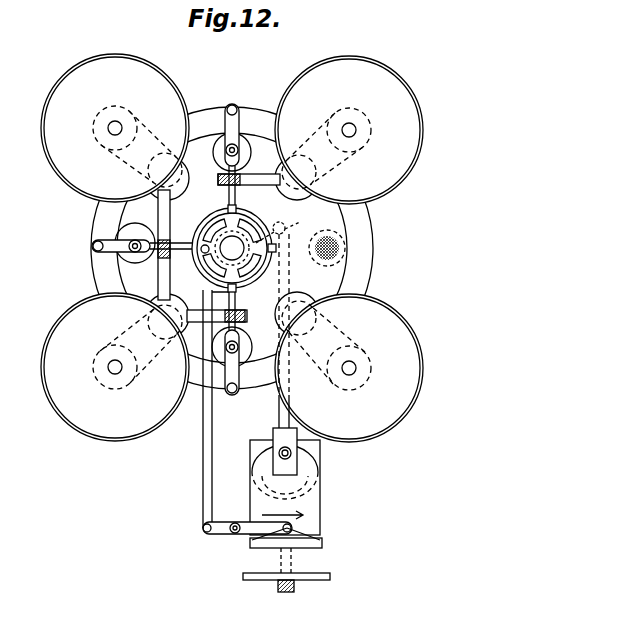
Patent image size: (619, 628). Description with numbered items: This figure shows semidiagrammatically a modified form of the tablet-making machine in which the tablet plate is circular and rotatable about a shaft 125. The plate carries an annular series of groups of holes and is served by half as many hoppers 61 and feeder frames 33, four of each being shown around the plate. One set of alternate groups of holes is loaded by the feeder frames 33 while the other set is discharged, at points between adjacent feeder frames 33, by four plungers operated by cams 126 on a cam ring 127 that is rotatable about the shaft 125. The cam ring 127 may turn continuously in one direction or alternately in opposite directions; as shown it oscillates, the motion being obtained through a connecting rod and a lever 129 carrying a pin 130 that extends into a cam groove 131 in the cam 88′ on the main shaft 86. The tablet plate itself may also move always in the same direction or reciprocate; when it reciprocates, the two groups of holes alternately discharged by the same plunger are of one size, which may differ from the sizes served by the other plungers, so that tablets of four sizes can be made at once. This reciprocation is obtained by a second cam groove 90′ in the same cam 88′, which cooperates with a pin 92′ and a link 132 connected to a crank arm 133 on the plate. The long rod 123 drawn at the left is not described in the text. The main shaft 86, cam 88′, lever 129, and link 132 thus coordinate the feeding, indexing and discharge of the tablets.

The feeder frames 33 is at (345, 296).
The hoppers 61 is at (63, 187).
The main shaft 86 is at (292, 592).
The cam 88′ is at (313, 505).
The cam groove 90′ is at (318, 462).
The pin 92′ is at (280, 450).
The rod 123 is at (203, 438).
The shaft 125 is at (245, 267).
The cams 126 is at (238, 212).
The cam ring 127 is at (262, 222).
The lever 129 is at (245, 534).
The pin 130 is at (293, 527).
The cam groove 131 is at (322, 540).
The link 132 is at (280, 405).
The crank arm 133 is at (310, 218).